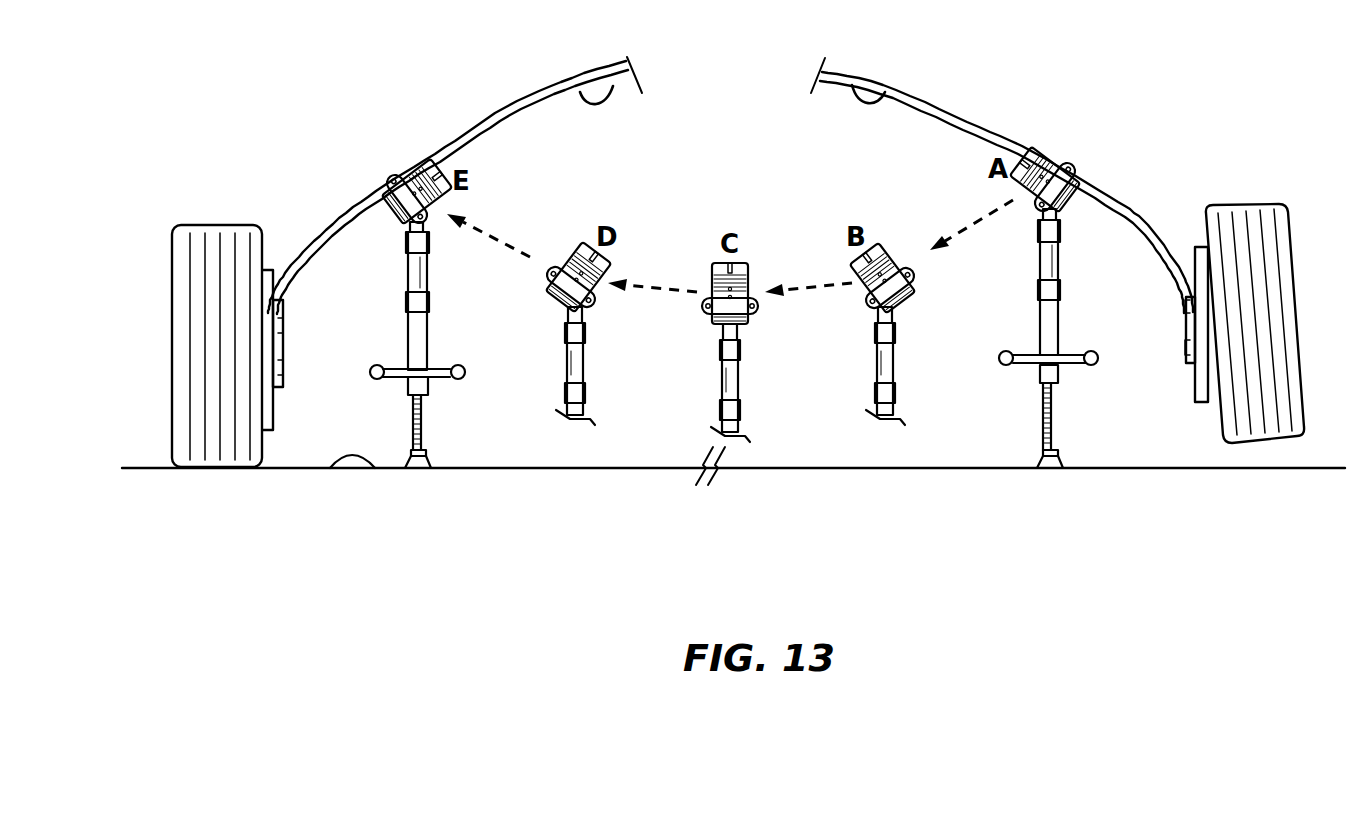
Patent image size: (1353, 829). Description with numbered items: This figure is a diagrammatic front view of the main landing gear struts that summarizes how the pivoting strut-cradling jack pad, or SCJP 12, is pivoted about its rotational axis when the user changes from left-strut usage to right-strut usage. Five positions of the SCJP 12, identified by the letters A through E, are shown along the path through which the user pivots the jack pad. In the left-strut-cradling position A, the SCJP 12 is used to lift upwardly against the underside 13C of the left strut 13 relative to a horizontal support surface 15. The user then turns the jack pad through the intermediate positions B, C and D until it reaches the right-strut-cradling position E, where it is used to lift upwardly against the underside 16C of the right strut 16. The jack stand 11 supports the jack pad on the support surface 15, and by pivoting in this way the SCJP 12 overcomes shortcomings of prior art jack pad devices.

The adjustable jack stand 11 is at (1066, 386).
The strut-cradling jack pad (SCJP) 12 is at (1072, 155).
The left strut 13 is at (1147, 213).
The underside of the left strut 13C is at (886, 93).
The horizontal support surface 15 is at (330, 470).
The right strut 16 is at (343, 212).
The underside of the right strut 16C is at (582, 94).